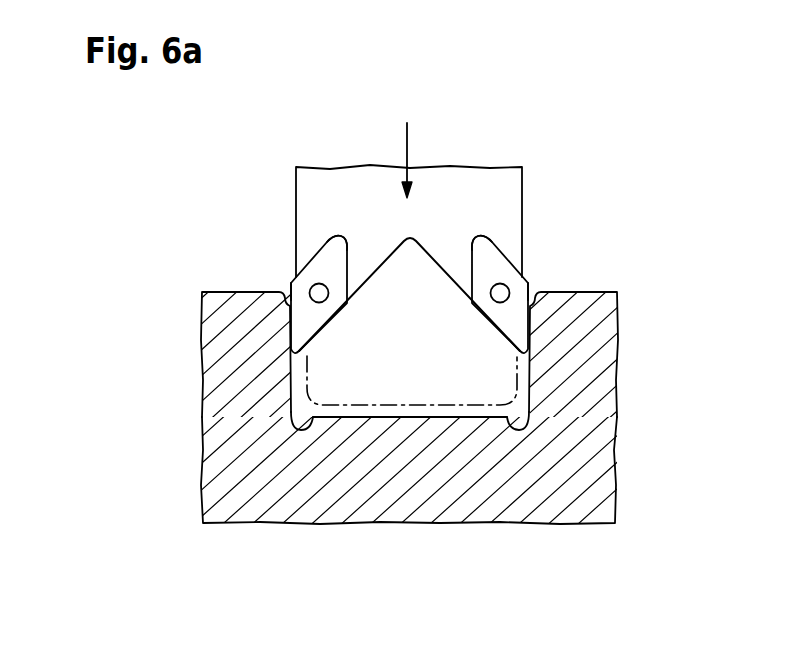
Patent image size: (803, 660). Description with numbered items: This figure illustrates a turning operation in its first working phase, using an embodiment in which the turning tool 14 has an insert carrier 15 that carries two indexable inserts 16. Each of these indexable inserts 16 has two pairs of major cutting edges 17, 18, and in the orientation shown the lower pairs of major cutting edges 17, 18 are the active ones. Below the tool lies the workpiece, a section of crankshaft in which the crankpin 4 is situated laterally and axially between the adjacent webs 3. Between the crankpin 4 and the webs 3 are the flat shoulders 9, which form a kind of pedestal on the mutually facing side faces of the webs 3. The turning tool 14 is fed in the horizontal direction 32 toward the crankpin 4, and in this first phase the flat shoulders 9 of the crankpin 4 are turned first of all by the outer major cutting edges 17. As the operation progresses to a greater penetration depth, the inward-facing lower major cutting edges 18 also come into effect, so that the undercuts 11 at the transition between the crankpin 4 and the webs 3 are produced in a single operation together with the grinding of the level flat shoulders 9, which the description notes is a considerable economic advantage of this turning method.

The web 3 is at (233, 314).
The crankpin 4 is at (415, 460).
The flat shoulder 9 is at (288, 377).
The undercut 11 is at (297, 423).
The turning tool 14 is at (409, 233).
The insert carrier 15 is at (323, 182).
The indexable insert 16 is at (323, 273).
The outer major cutting edge 17 is at (318, 246).
The inward-facing lower major cutting edge 18 is at (351, 257).
The horizontal direction 32 is at (407, 140).